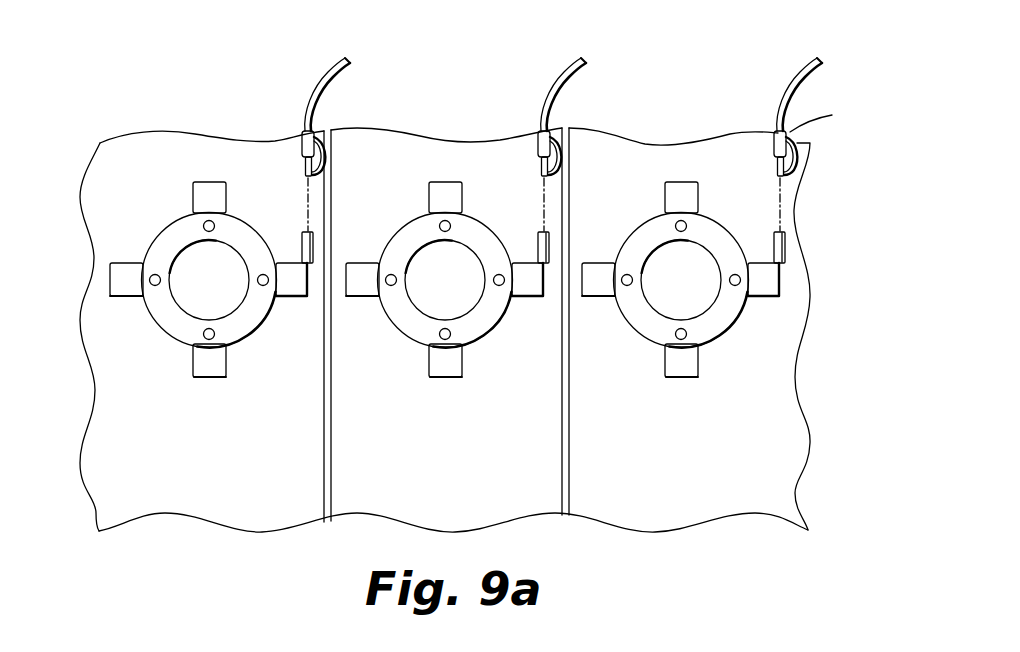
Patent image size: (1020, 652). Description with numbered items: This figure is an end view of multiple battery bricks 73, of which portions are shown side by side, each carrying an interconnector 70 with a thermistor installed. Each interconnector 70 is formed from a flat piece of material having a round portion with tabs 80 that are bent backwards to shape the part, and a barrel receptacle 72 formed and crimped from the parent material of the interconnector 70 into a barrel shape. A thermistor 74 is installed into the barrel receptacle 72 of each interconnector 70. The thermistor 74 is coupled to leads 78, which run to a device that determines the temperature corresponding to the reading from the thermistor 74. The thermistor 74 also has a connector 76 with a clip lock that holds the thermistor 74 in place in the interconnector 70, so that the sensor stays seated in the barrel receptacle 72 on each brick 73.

The interconnector 70 is at (162, 233).
The barrel receptacle 72 is at (314, 247).
The brick 73 is at (163, 443).
The thermistor 74 is at (306, 163).
The connector 76 is at (323, 132).
The leads 78 is at (310, 97).
The tab 80 is at (291, 300).